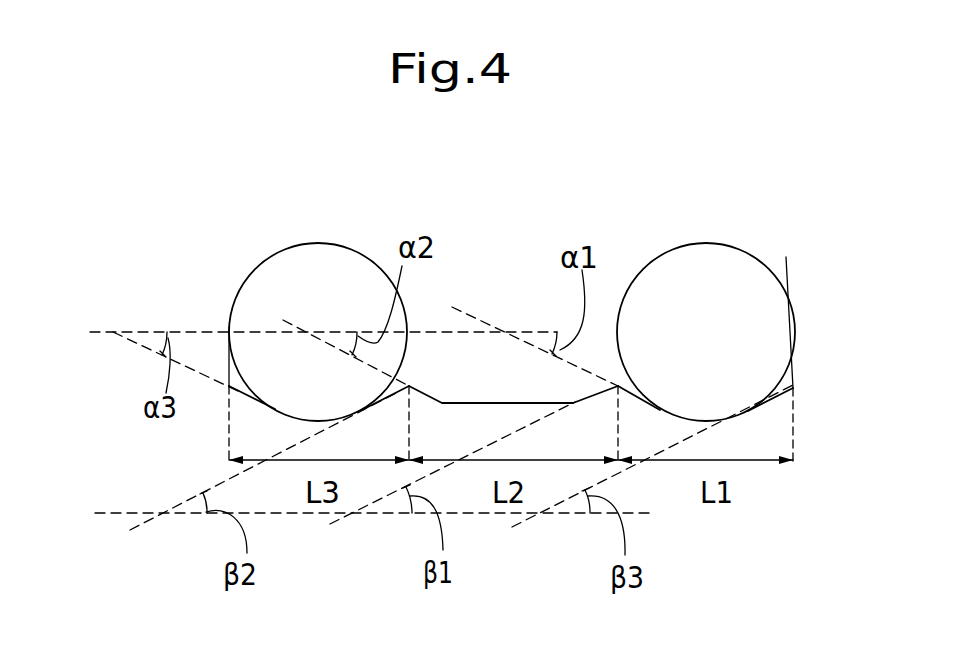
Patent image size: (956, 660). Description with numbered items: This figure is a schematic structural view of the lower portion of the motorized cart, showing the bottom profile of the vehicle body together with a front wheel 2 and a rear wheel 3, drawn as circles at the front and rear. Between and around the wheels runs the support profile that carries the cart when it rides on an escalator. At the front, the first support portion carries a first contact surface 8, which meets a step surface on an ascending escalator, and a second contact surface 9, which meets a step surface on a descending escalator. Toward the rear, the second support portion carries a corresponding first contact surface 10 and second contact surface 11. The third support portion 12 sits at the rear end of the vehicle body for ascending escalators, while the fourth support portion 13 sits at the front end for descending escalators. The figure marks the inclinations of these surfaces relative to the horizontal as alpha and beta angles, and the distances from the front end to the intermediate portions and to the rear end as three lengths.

The front wheel 2 is at (722, 273).
The rear wheel 3 is at (316, 255).
The first contact surface 8 is at (628, 393).
The second contact surface 9 is at (596, 398).
The first contact surface 10 is at (425, 397).
The second contact surface 11 is at (390, 397).
The third support portion 12 is at (233, 396).
The fourth support portion 13 is at (777, 398).